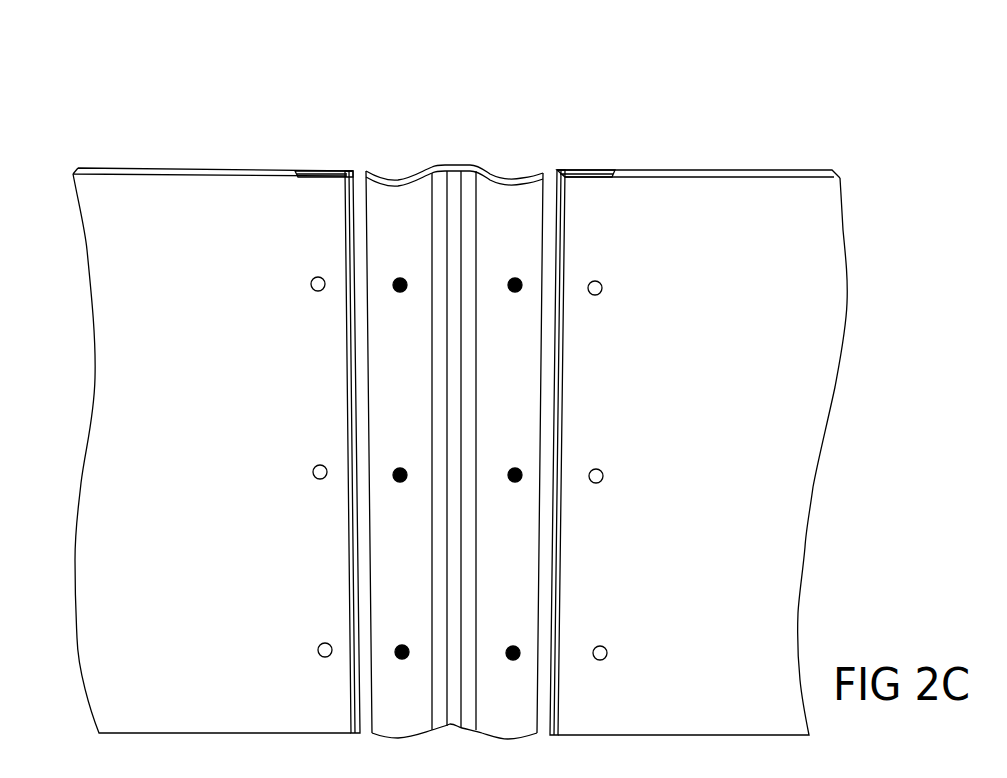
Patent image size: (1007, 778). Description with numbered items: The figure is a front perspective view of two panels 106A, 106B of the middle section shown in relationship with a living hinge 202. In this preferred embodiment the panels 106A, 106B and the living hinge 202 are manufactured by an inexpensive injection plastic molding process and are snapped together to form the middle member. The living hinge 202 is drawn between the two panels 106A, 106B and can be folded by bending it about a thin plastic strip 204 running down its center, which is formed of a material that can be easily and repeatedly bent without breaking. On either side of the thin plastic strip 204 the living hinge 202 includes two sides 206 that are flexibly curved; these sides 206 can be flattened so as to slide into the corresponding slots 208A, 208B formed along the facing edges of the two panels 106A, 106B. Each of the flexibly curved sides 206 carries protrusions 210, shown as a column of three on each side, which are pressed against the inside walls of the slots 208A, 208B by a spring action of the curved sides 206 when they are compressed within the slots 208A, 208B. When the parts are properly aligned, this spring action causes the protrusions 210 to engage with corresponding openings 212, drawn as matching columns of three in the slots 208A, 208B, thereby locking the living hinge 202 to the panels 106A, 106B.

The panel 106A is at (193, 197).
The panel 106B is at (718, 200).
The living hinge 202 is at (543, 87).
The thin plastic strip 204 is at (455, 166).
The sides 206 is at (397, 177).
The slot 208A is at (324, 173).
The slot 208B is at (595, 175).
The protrusions 210 is at (399, 279).
The openings 212 is at (313, 279).